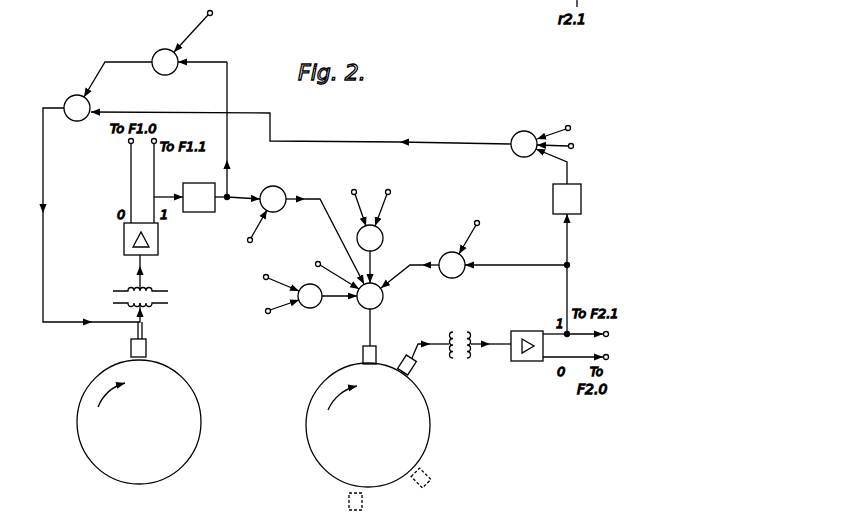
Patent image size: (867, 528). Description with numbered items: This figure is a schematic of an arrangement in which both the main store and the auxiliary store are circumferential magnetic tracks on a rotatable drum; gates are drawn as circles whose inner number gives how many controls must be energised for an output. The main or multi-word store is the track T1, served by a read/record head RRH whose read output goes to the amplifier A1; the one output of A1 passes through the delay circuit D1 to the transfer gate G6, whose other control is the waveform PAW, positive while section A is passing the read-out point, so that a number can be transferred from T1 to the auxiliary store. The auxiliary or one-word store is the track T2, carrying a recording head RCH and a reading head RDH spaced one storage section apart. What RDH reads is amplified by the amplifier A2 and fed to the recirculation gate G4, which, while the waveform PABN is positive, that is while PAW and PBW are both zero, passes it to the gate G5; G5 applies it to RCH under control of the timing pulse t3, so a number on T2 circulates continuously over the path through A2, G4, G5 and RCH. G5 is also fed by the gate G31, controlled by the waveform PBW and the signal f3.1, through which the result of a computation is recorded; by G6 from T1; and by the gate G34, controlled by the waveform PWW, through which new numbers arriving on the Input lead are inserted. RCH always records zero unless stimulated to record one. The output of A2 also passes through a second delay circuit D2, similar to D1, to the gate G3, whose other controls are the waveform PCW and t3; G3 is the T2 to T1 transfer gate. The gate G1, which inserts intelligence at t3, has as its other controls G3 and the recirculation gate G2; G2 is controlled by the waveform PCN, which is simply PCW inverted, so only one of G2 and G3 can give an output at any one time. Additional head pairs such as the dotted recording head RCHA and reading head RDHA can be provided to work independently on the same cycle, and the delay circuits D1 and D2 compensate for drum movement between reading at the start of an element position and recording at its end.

The gate G1 is at (76, 118).
The recirculation gate G2 is at (164, 72).
The T2 to T1 transfer gate G3 is at (524, 135).
The recirculation gate G4 is at (453, 274).
The gate G5 is at (382, 296).
The transfer gate G6 is at (273, 189).
The gate G31 is at (387, 238).
The gate G34 is at (316, 306).
The delay circuit D1 is at (199, 188).
The delay circuit D2 is at (579, 199).
The amplifier A1 is at (126, 239).
The amplifier A2 is at (527, 356).
The track T1 is at (139, 422).
The track T2 is at (368, 425).
The read/record head RRH is at (158, 348).
The recording head RCH is at (351, 354).
The reading head RDH is at (424, 363).
The recording head RCHA is at (440, 472).
The reading head RDHA is at (379, 500).
The waveform PCN is at (210, 29).
The waveform PCW is at (573, 129).
The timing pulse t3 is at (450, 214).
The waveform PBW is at (349, 199).
The computation result signal f3.1 is at (393, 199).
The waveform PABN is at (481, 228).
The waveform PAW is at (247, 236).
The waveform PWW is at (262, 280).
The data input Input is at (269, 315).